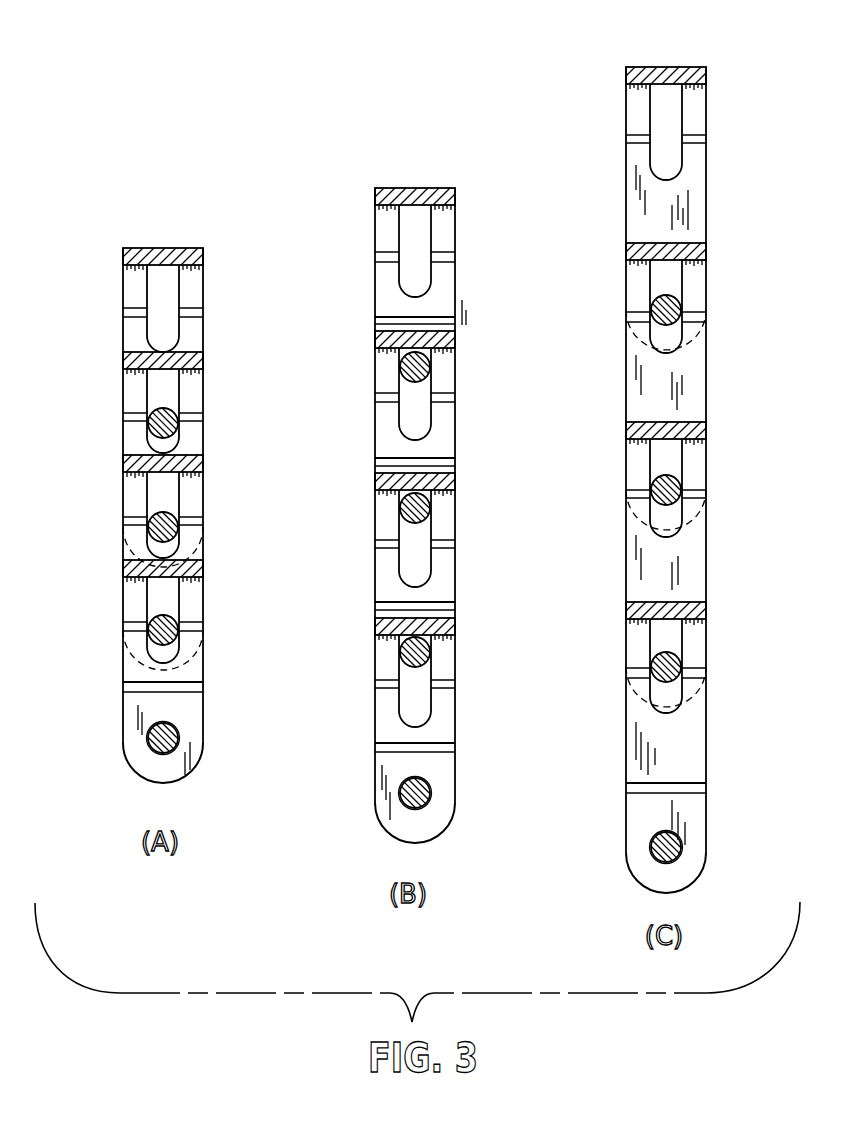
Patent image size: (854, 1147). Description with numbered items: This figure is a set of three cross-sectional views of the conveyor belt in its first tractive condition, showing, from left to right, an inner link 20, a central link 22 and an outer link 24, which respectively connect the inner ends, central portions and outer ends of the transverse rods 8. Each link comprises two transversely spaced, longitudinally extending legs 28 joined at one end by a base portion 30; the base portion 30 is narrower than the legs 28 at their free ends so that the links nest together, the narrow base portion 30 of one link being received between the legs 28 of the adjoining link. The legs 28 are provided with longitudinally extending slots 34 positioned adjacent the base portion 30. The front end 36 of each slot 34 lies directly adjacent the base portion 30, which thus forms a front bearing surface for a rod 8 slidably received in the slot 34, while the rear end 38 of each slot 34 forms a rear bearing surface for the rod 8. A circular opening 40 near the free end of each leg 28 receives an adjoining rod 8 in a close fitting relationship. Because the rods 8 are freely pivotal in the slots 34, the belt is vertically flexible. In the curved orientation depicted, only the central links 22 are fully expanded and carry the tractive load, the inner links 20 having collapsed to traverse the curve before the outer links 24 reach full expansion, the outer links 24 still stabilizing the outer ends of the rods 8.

The inner links 20 is at (129, 237).
The central links 22 is at (401, 175).
The outer links 24 is at (639, 58).
The legs 28 is at (642, 218).
The base portion 30 is at (180, 248).
The slots 34 is at (157, 393).
The front end of slot 36 is at (165, 268).
The rear end of slot 38 is at (177, 349).
The rods 8 is at (192, 432).
The circular opening 40 is at (155, 742).